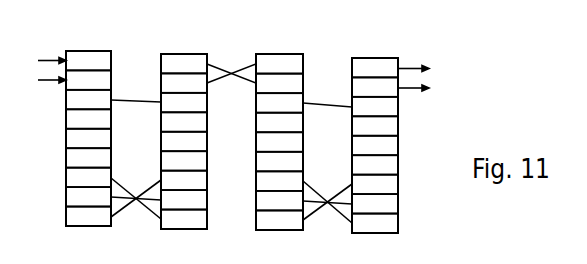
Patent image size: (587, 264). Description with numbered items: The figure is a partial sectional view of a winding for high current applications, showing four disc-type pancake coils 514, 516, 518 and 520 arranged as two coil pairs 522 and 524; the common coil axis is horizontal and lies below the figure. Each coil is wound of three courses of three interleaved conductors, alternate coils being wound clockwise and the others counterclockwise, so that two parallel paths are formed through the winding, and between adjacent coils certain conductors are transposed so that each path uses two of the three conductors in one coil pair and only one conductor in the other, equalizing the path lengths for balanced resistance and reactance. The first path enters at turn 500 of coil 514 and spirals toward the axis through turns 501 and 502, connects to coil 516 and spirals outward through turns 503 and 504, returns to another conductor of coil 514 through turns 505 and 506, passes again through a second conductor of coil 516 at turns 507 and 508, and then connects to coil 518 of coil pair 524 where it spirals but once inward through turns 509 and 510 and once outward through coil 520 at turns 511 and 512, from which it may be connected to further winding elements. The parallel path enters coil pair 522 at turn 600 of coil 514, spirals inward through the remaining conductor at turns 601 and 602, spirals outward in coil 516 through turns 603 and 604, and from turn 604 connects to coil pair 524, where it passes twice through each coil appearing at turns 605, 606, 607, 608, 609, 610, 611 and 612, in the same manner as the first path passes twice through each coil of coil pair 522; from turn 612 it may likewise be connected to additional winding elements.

The turn 500 is at (88, 60).
The turn 600 is at (88, 79).
The turn 504 is at (136, 101).
The turn 501 is at (88, 118).
The turn 601 is at (88, 138).
The turn 505 is at (88, 157).
The turn 502 is at (136, 198).
The turn 602 is at (136, 198).
The turn 506 is at (136, 198).
The turn 508 is at (232, 73).
The turn 604 is at (232, 73).
The turn 507 is at (184, 121).
The turn 603 is at (184, 141).
The turn 503 is at (184, 160).
The turn 608 is at (327, 104).
The turn 605 is at (279, 122).
The turn 509 is at (279, 141).
The turn 609 is at (279, 161).
The turn 606 is at (327, 201).
The turn 510 is at (327, 202).
The turn 610 is at (327, 202).
The turn 612 is at (375, 67).
The turn 512 is at (375, 86).
The turn 611 is at (375, 125).
The turn 511 is at (375, 145).
The turn 607 is at (375, 164).
The disc-type coil 514 is at (66, 126).
The disc-type coil 516 is at (161, 126).
The disc-type coil 518 is at (256, 128).
The disc-type coil 520 is at (398, 131).
The coil pair 522 is at (118, 41).
The coil pair 524 is at (308, 46).